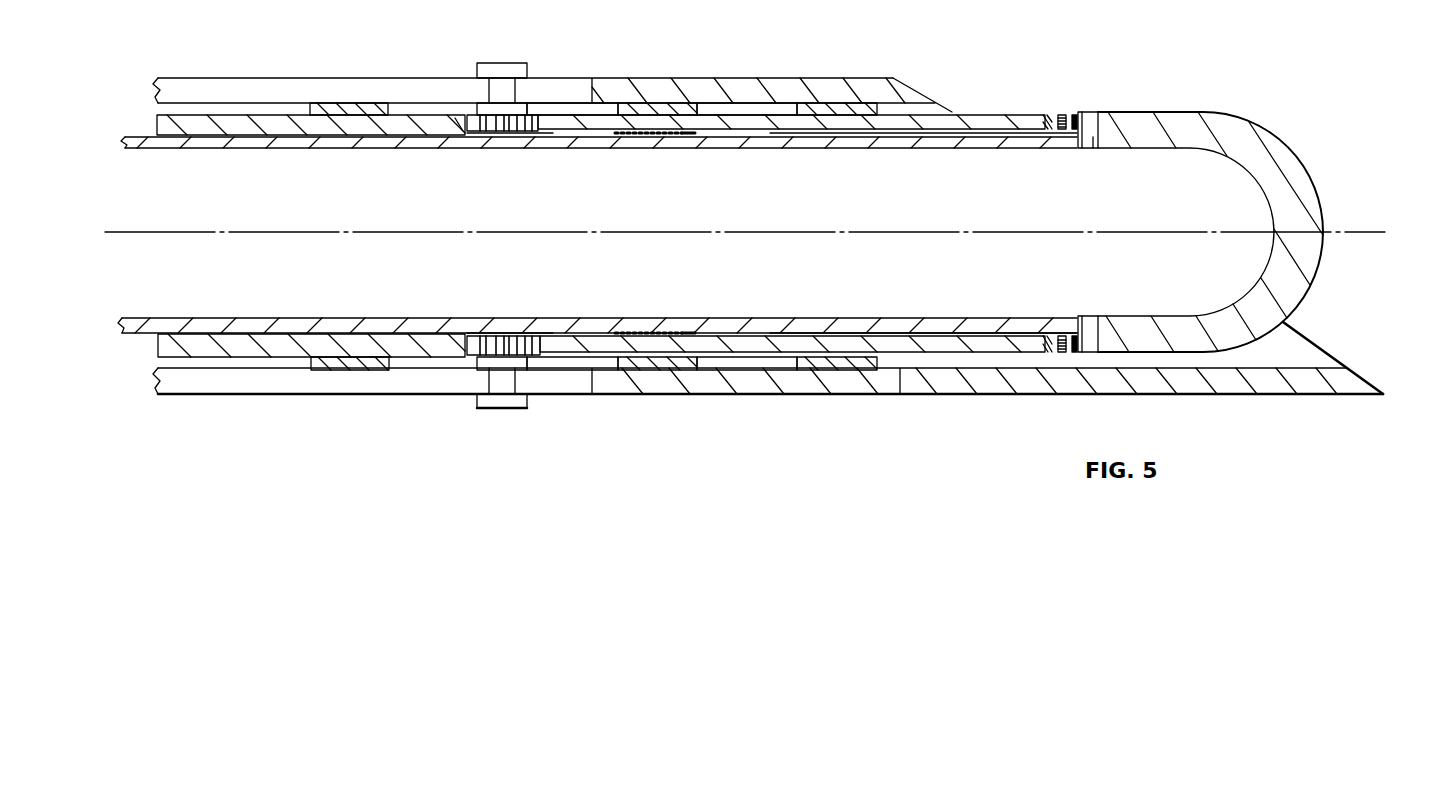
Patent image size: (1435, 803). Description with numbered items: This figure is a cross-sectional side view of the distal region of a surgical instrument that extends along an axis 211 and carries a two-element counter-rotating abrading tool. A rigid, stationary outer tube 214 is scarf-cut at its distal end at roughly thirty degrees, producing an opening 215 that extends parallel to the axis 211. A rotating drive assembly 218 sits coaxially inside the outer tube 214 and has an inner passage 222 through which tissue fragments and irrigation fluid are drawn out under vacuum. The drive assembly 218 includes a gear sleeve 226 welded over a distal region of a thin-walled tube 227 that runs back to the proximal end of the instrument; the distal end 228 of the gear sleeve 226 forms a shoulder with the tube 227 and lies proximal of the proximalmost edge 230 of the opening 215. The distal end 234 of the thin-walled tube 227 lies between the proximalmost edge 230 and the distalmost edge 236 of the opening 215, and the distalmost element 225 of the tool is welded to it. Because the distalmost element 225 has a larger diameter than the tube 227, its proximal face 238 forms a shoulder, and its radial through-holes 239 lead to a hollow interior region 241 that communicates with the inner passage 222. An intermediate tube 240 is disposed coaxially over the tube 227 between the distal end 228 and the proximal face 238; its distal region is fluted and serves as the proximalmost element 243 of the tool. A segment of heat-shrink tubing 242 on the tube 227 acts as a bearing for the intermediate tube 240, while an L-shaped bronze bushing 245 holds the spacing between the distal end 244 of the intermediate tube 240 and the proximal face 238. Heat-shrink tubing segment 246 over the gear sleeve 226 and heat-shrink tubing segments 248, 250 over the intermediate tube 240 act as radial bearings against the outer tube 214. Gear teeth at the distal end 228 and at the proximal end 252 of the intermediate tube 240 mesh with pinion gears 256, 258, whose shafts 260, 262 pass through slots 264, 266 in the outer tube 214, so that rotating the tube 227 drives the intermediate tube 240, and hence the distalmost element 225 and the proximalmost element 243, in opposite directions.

The axis 211 is at (1354, 226).
The outer tube 214 is at (267, 72).
The opening 215 is at (1316, 326).
The drive assembly 218 is at (152, 129).
The inner passage 222 is at (195, 228).
The distalmost element 225 is at (1215, 112).
The gear sleeve 226 is at (353, 125).
The thin-walled tube 227 is at (221, 146).
The distal end of gear sleeve 228 is at (458, 120).
The proximalmost edge of opening 230 is at (910, 82).
The distal end of thin-walled tube 234 is at (1070, 146).
The distalmost edge of opening 236 is at (1380, 393).
The proximal face of distalmost element 238 is at (1082, 112).
The through-holes 239 is at (1090, 138).
The intermediate tube 240 is at (760, 120).
The hollow interior region 241 is at (1244, 215).
The heat-shrink tubing 242 is at (655, 135).
The proximalmost element 243 is at (972, 118).
The distal end of intermediate tube 244 is at (1048, 112).
The bronze bushing 245 is at (1063, 112).
The heat-shrink tubing segment 246 is at (355, 103).
The heat-shrink tubing segment 248 is at (650, 105).
The heat-shrink tubing segment 250 is at (830, 105).
The proximal end of intermediate tube 252 is at (555, 122).
The pinion gear 256 is at (503, 125).
The pinion gear 258 is at (530, 345).
The shaft 260 is at (510, 66).
The shaft 262 is at (506, 408).
The slot 264 is at (208, 92).
The slot 266 is at (268, 386).